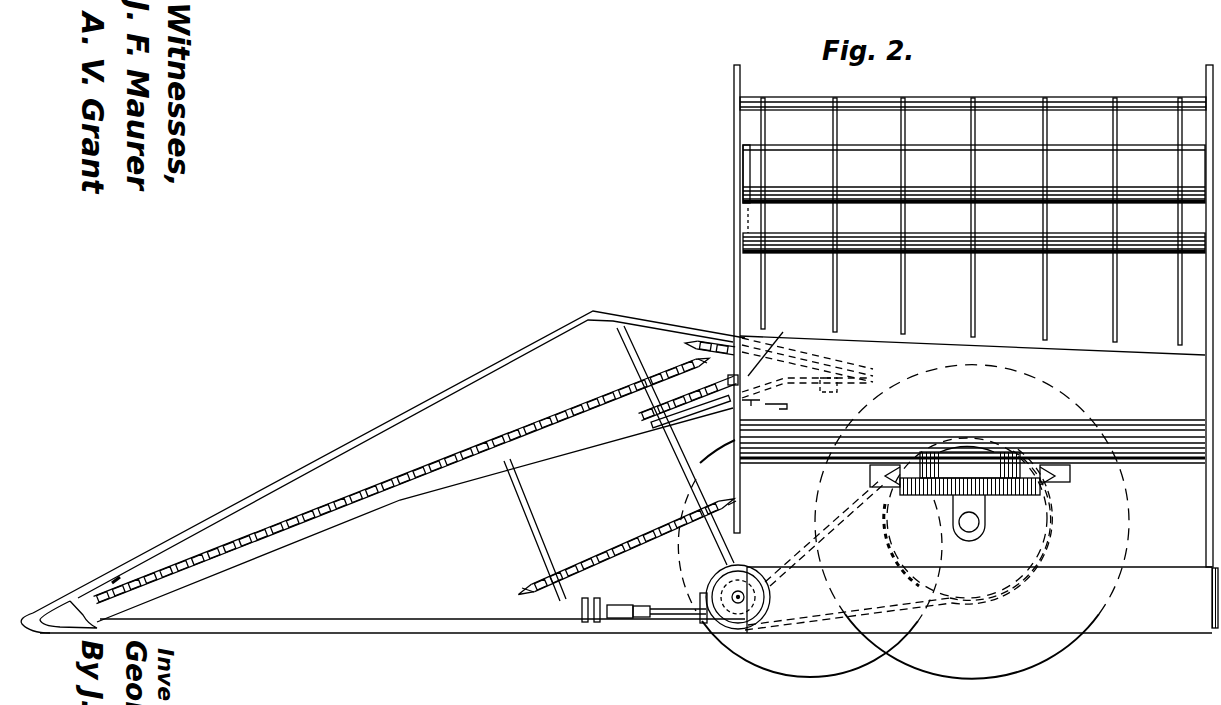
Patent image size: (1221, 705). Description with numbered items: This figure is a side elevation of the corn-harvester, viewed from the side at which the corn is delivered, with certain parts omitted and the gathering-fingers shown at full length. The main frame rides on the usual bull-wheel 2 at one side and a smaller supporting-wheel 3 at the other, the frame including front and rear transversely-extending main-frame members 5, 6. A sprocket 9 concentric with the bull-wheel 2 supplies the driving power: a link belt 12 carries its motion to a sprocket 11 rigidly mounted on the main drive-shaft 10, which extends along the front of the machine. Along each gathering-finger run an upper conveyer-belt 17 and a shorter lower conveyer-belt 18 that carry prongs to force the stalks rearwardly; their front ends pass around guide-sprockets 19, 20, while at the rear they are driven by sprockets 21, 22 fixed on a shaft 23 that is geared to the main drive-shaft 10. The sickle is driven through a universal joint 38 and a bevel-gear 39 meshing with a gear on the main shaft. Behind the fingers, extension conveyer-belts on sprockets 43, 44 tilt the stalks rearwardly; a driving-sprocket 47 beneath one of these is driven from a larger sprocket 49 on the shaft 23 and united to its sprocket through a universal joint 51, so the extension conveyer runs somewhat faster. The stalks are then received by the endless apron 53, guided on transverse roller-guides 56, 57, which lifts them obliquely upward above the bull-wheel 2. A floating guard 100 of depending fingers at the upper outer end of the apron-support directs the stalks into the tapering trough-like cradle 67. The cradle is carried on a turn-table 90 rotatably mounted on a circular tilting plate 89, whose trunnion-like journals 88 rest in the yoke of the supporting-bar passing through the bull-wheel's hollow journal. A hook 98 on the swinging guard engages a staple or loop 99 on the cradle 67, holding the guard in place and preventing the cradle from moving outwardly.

The bull-wheel 2 is at (1130, 545).
The supporting-wheel 3 is at (746, 670).
The front transversely-extending main-frame member 5 is at (734, 122).
The rear transversely-extending main-frame member 6 is at (1197, 315).
The sprocket 9 is at (1050, 546).
The main drive-shaft 10 is at (766, 590).
The sprocket 11 is at (770, 600).
The link belt 12 is at (862, 618).
The upper conveyer-belt 17 is at (375, 507).
The lower conveyer-belt 18 is at (606, 550).
The guide-sprocket 19 is at (118, 578).
The guide-sprocket 20 is at (540, 581).
The sprocket 21 is at (690, 371).
The sprocket 22 is at (727, 502).
The shaft 23 is at (680, 452).
The universal joint 38 is at (641, 607).
The bevel-gear 39 is at (730, 597).
The sprocket 43 is at (726, 340).
The sprocket 44 is at (848, 374).
The driving-sprocket 47 is at (775, 344).
The sprocket 49 is at (650, 422).
The universal joint 51 is at (722, 375).
The apron 53 is at (974, 174).
The roller-guide 56 is at (742, 162).
The roller-guide 57 is at (742, 229).
The cradle 67 is at (972, 427).
The trunnion-like journal 88 is at (876, 478).
The tilting plate 89 is at (1000, 496).
The turn-table 90 is at (955, 478).
The hook 98 is at (778, 417).
The staple or loop 99 is at (770, 402).
The floating guard 100 is at (1043, 285).